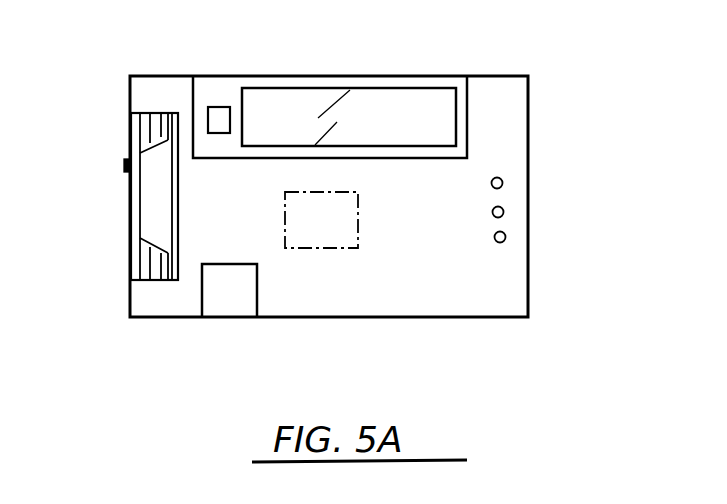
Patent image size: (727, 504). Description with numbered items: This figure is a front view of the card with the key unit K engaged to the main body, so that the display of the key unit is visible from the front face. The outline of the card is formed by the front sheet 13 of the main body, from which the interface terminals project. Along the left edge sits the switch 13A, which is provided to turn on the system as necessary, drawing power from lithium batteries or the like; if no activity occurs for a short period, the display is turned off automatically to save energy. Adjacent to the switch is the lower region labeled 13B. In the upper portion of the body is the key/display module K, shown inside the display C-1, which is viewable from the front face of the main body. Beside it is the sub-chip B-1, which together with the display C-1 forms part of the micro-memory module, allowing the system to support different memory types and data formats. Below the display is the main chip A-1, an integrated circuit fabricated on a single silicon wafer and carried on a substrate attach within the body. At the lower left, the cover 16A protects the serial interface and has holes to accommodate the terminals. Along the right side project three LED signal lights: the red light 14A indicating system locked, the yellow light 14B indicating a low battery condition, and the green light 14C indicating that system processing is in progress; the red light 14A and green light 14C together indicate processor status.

The front sheet 13 is at (437, 298).
The switch 13A is at (125, 162).
The side panel bottom 13B is at (131, 280).
The red light 14A is at (503, 181).
The yellow light 14B is at (504, 211).
The green light 14C is at (506, 236).
The cover 16A is at (232, 302).
The main chip A-1 is at (358, 230).
The sub-chip B-1 is at (215, 107).
The display C-1 is at (457, 88).
The key unit K is at (287, 98).